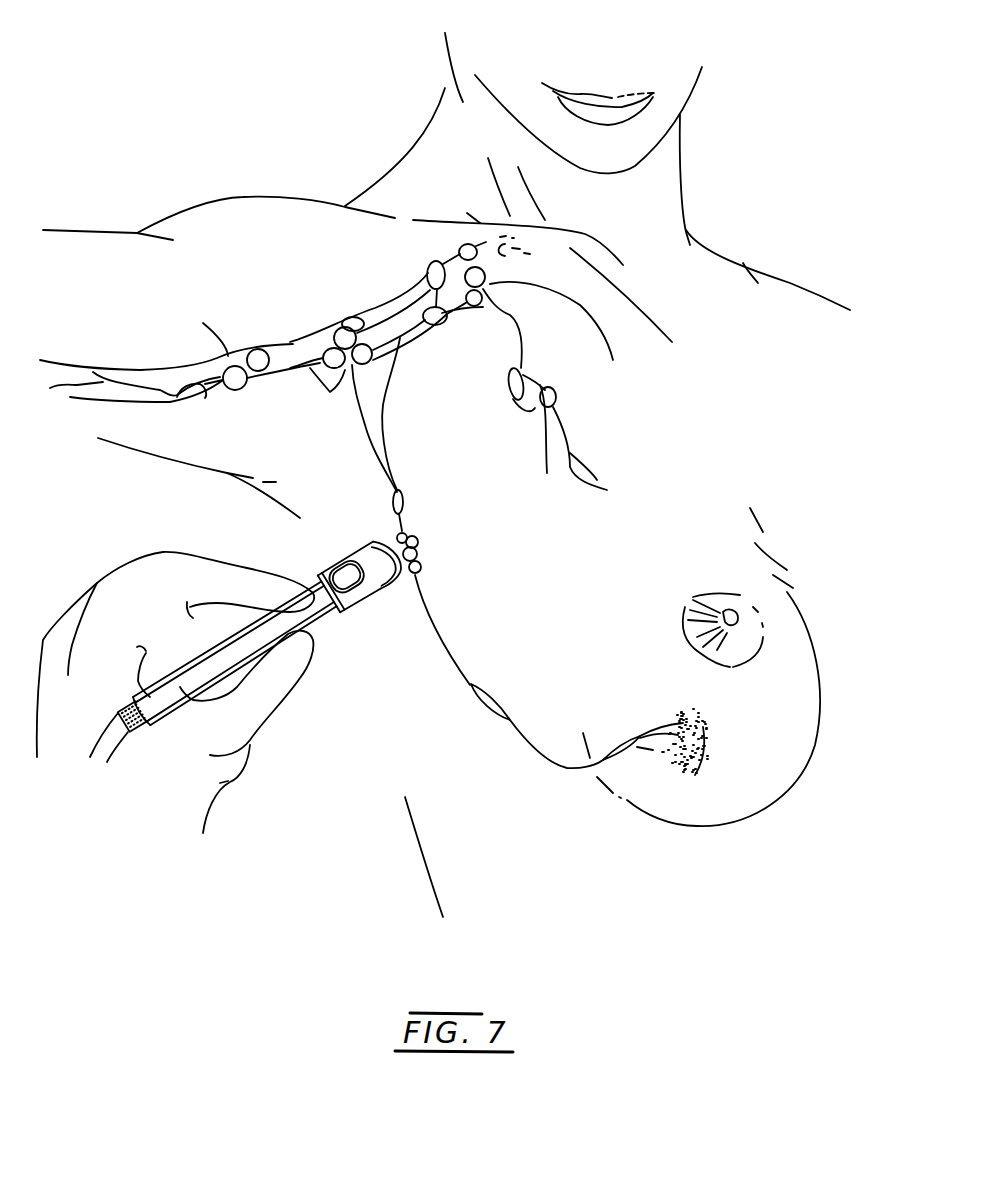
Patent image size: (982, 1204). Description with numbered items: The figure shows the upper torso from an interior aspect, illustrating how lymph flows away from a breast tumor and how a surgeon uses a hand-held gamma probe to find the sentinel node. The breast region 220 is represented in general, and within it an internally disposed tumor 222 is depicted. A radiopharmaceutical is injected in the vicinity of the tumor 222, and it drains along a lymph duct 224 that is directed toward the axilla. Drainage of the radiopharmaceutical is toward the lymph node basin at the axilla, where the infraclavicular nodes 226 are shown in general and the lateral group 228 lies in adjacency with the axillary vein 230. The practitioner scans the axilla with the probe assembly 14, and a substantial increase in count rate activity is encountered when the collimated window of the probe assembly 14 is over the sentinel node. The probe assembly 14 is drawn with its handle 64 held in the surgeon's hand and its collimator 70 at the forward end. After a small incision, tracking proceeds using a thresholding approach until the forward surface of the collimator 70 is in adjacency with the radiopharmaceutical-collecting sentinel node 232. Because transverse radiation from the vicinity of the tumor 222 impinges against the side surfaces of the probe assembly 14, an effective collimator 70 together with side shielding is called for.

The probe assembly 14 is at (261, 616).
The probe handle 64 is at (227, 641).
The collimator 70 is at (370, 542).
The breast region 220 is at (820, 195).
The tumor 222 is at (695, 775).
The lymph duct 224 is at (518, 723).
The infraclavicular nodes 226 is at (418, 258).
The lateral group 228 is at (346, 309).
The axillary vein 230 is at (287, 347).
The sentinel node 232 is at (418, 552).